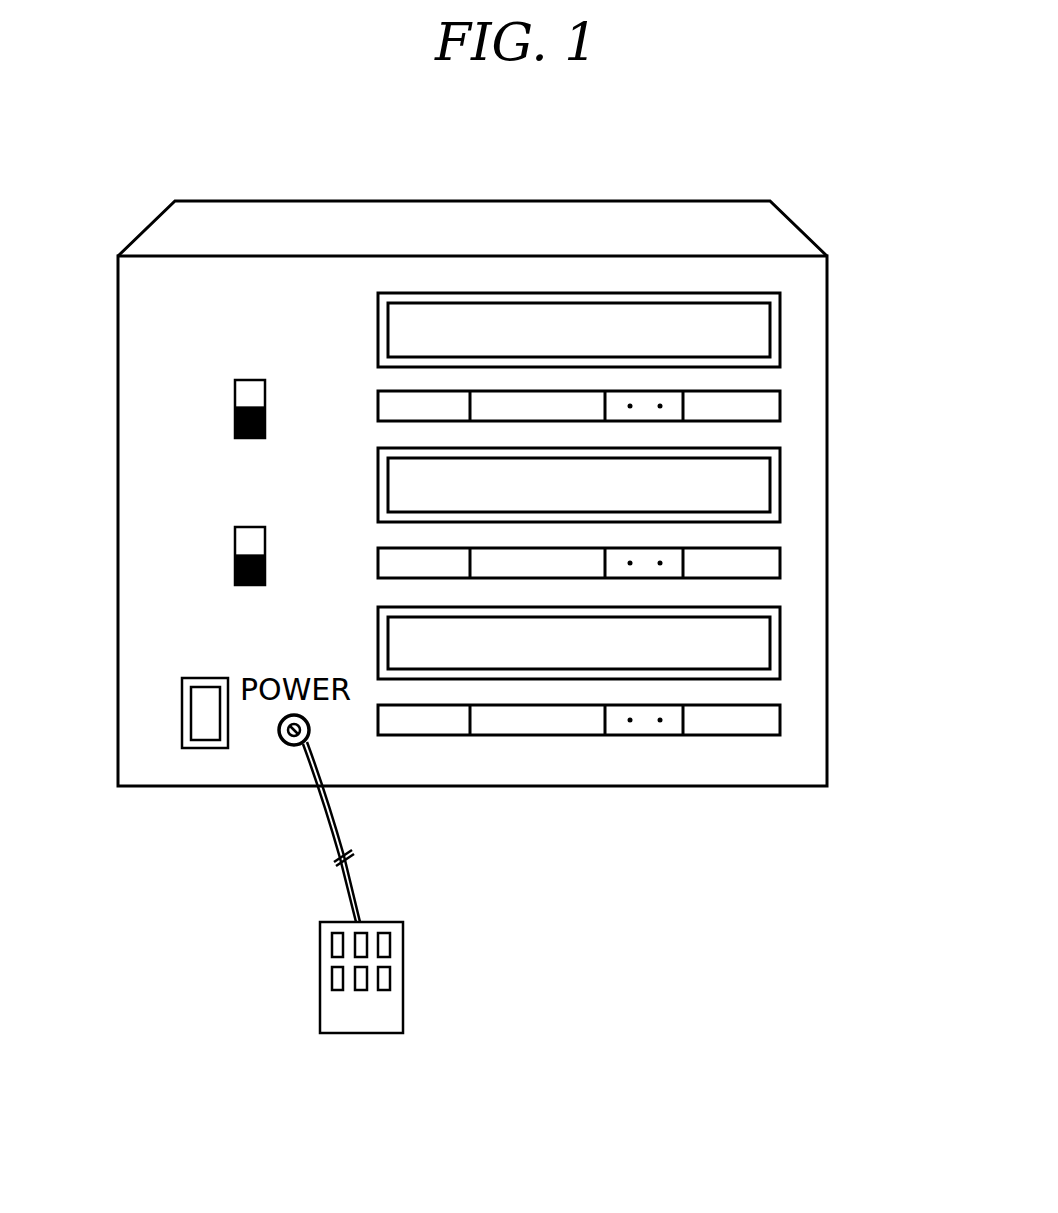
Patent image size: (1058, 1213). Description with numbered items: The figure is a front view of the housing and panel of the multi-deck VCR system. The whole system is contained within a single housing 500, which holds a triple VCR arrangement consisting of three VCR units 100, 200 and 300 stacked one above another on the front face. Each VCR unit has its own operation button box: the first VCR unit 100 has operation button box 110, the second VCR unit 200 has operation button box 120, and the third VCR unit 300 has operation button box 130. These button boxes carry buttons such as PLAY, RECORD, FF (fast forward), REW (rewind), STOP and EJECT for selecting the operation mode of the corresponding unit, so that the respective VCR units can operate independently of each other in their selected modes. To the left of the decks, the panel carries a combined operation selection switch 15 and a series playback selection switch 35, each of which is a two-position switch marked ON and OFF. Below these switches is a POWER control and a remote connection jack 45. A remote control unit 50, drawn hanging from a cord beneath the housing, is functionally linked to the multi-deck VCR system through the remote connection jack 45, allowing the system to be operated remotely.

The housing 500 is at (592, 176).
The VCR unit 100 is at (840, 331).
The VCR unit 200 is at (840, 487).
The VCR unit 300 is at (840, 645).
The operation button box 110 is at (782, 404).
The operation button box 120 is at (782, 561).
The operation button box 130 is at (782, 718).
The combined operation selection switch 15 is at (235, 441).
The series playback selection switch 35 is at (235, 586).
The remote connection jack 45 is at (289, 744).
The remote control unit 50 is at (335, 1013).